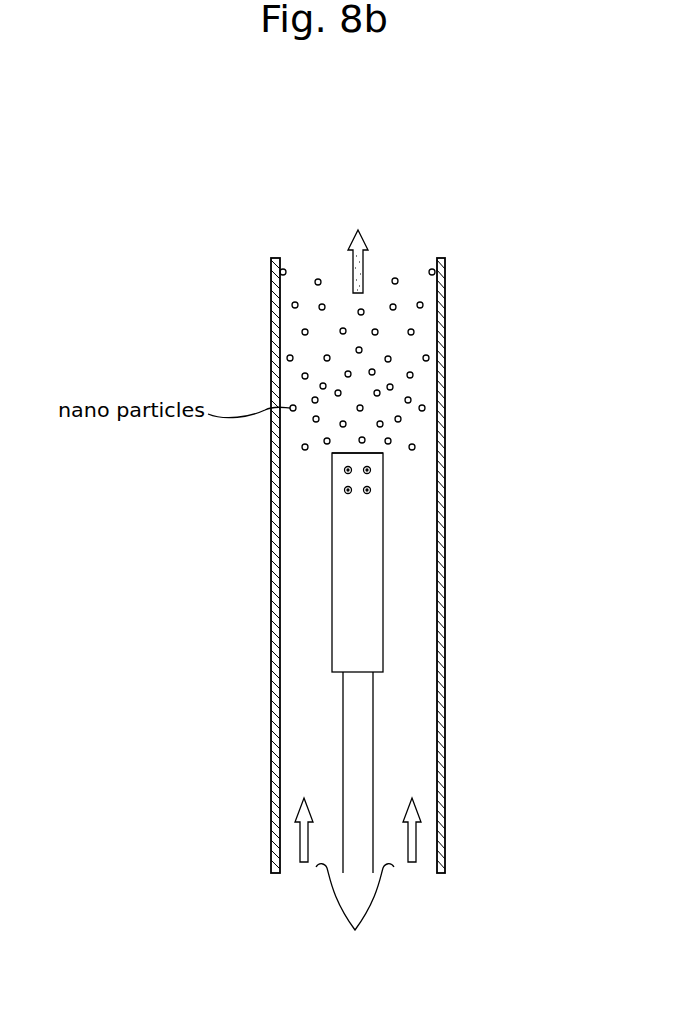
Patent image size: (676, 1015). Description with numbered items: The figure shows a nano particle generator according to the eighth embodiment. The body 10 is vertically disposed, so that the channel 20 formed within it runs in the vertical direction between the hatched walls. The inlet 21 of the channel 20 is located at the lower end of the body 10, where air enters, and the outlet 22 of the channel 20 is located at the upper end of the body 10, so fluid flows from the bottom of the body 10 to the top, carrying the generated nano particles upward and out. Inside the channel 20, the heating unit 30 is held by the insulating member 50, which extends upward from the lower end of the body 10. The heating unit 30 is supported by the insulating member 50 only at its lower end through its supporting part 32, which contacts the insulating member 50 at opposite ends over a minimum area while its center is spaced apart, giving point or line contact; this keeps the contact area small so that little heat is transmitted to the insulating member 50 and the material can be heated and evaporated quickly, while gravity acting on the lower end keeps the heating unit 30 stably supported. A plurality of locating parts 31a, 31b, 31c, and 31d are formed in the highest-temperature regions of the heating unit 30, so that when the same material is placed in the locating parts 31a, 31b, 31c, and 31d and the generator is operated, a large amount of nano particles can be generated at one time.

The body 10 is at (271, 752).
The channel 20 is at (402, 753).
The inlet 21 is at (355, 913).
The outlet 22 is at (392, 248).
The heating unit 30 is at (386, 460).
The locating part 31a is at (344, 491).
The locating part 31b is at (344, 470).
The locating part 31c is at (371, 470).
The locating part 31d is at (371, 491).
The supporting part 32 is at (353, 641).
The insulating member 50 is at (357, 848).